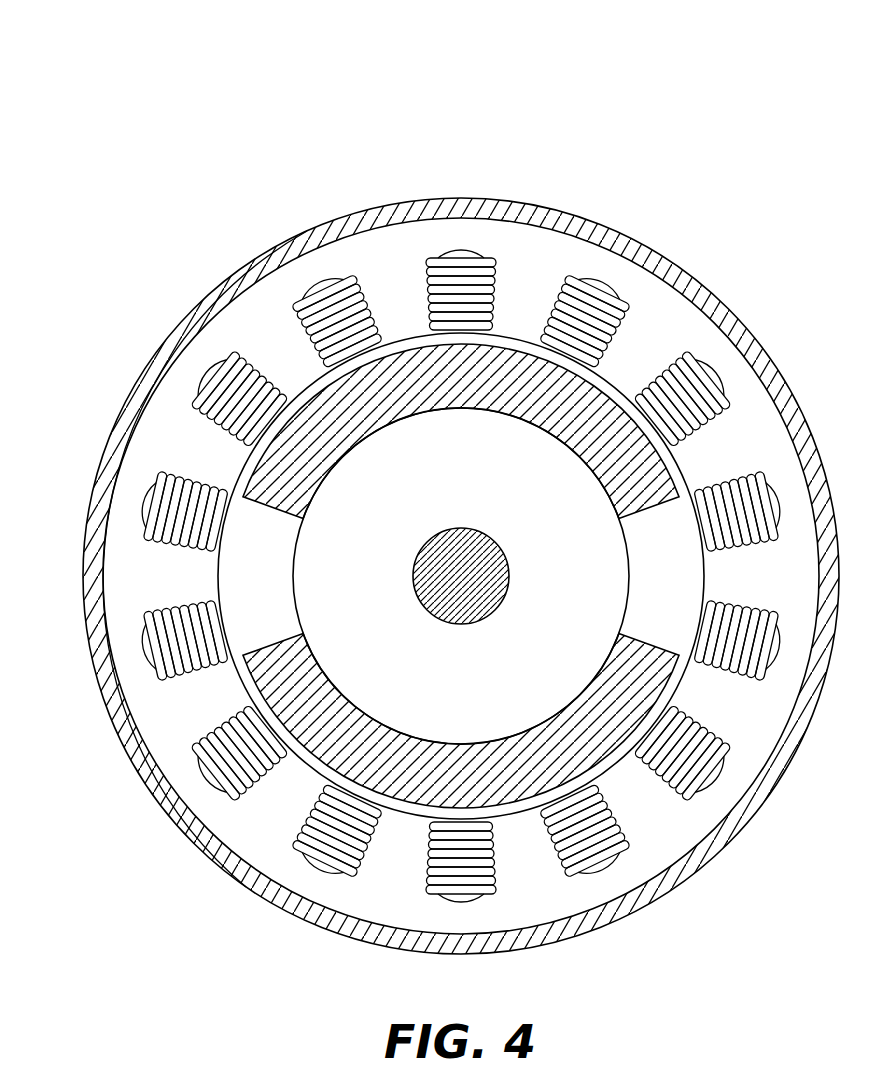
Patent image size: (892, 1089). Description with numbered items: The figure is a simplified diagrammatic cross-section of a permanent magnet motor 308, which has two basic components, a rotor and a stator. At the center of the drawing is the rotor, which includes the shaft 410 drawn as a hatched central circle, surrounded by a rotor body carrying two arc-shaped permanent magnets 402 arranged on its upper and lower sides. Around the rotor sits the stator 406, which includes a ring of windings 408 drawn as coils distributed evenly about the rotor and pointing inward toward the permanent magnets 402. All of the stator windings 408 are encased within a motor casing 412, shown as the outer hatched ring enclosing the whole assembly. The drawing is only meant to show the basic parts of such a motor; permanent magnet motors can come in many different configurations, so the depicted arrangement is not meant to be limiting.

The permanent magnet motor 308 is at (658, 92).
The permanent magnets 402 is at (598, 392).
The stator 406 is at (161, 412).
The windings 408 is at (146, 583).
The shaft 410 is at (439, 553).
The motor casing 412 is at (470, 197).